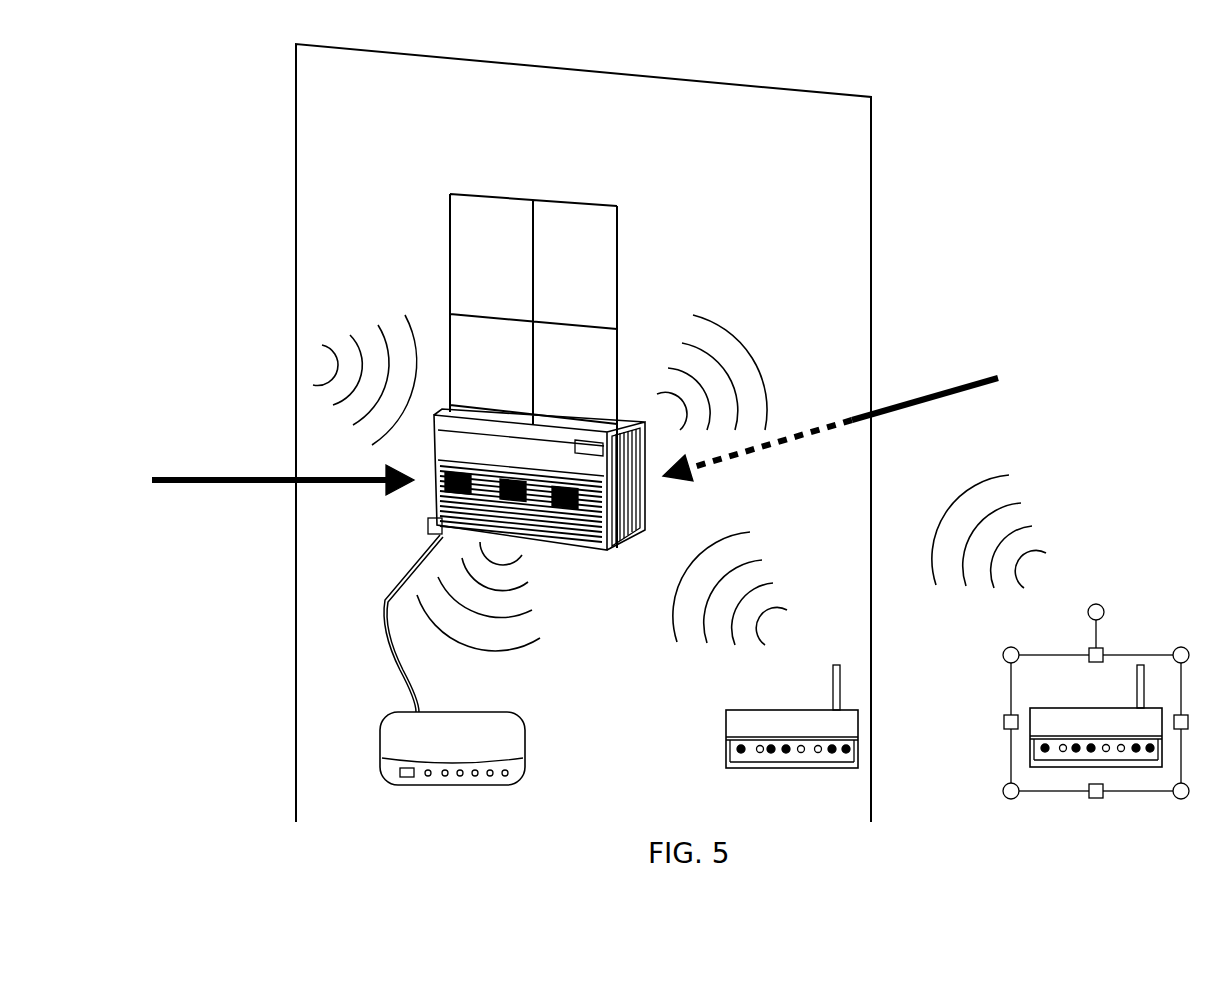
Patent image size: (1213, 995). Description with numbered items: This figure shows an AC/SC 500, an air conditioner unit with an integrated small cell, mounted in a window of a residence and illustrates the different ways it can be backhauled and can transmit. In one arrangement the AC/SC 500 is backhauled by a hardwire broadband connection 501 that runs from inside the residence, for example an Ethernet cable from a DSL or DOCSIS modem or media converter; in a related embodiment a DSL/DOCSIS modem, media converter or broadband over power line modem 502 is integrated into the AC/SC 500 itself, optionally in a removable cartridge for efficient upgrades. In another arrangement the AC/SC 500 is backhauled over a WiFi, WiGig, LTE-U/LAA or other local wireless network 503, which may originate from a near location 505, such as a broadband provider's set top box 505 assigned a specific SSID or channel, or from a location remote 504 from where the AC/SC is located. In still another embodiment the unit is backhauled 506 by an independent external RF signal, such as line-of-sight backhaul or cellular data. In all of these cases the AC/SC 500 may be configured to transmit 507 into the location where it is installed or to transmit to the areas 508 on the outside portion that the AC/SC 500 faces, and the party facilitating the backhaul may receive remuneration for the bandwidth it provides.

The AC/SC 500 is at (565, 548).
The hardwire broadband connection 501 is at (382, 606).
The broadband over power line modem 502 is at (428, 523).
The local wireless network 503 is at (698, 572).
The remote location 504 is at (954, 514).
The near location set top box 505 is at (790, 768).
The external RF signal backhaul 506 is at (320, 382).
The transmission into the location 507 is at (468, 644).
The outside areas 508 is at (750, 358).